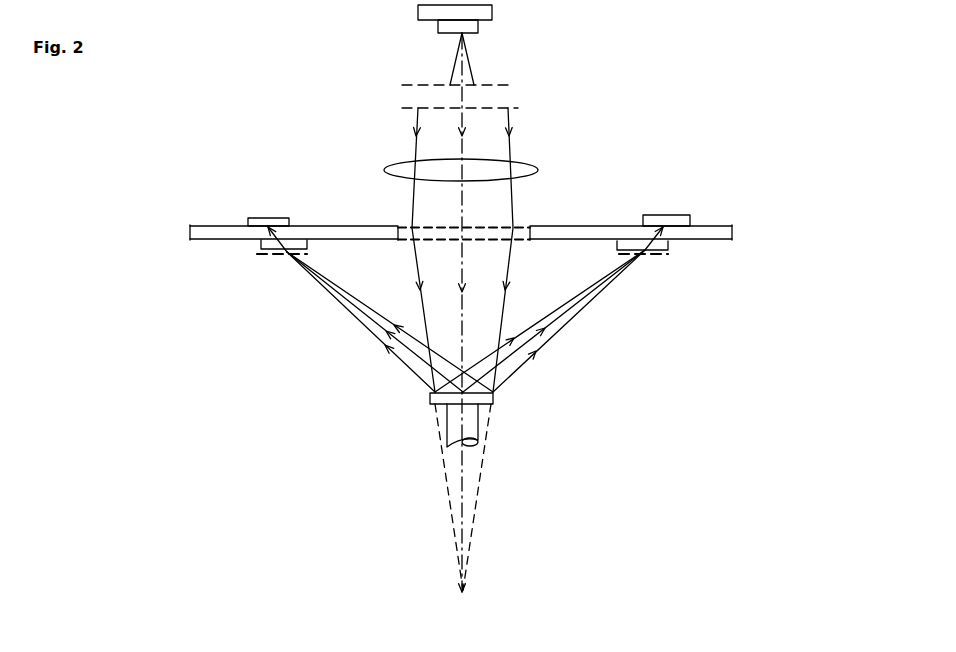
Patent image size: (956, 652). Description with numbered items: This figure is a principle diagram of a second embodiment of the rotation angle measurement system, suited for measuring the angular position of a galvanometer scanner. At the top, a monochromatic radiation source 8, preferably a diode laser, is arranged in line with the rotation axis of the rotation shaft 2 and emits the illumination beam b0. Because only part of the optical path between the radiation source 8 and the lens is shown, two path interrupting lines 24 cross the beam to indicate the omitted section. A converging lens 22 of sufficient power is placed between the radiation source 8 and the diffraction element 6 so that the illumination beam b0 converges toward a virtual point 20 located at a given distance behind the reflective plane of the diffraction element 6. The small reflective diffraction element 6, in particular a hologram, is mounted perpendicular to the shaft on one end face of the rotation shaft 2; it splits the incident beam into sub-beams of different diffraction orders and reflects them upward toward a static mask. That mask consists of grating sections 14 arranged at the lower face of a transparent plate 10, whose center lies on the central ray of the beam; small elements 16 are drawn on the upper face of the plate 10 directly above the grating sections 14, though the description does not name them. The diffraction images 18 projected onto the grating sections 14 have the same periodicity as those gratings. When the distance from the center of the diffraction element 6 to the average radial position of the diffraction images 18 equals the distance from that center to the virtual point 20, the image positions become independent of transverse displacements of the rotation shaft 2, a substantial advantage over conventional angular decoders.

The rotation shaft 2 is at (468, 435).
The reflective diffraction element 6 is at (493, 399).
The radiation source 8 is at (492, 15).
The plate 10 is at (190, 238).
The grating sections 14 is at (277, 256).
The detector 16 is at (274, 218).
The diffraction images 18 is at (260, 254).
The virtual point 20 is at (463, 510).
The converging lens 22 is at (538, 170).
The path interrupting lines 24 is at (475, 212).
The illumination beam b0 is at (463, 298).